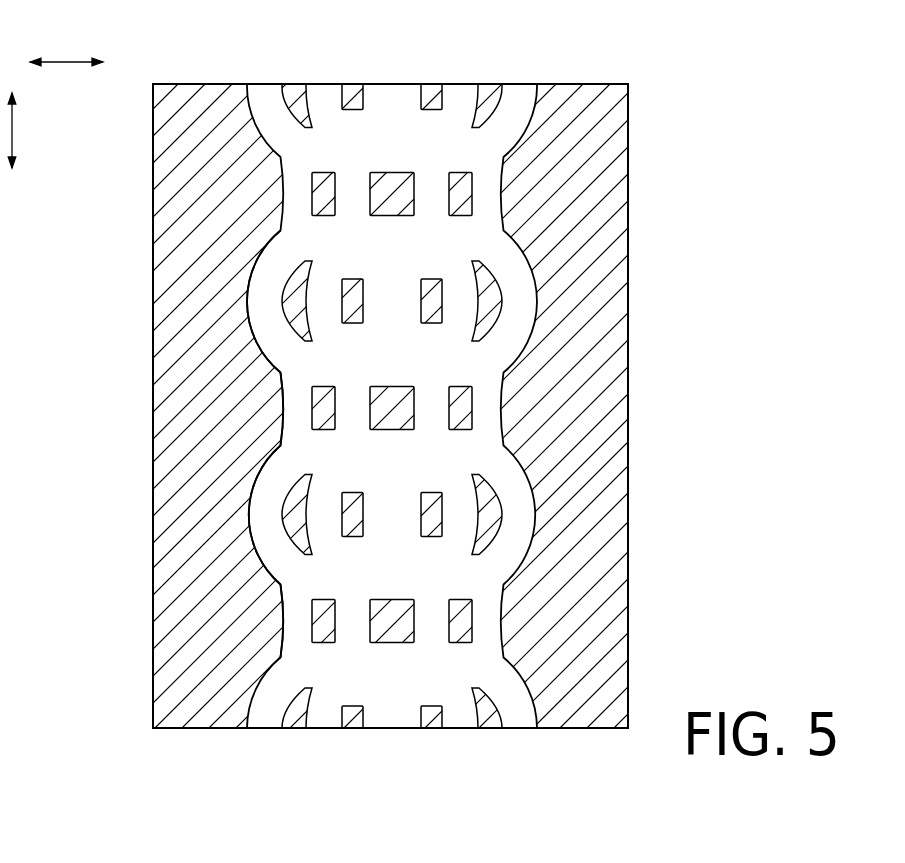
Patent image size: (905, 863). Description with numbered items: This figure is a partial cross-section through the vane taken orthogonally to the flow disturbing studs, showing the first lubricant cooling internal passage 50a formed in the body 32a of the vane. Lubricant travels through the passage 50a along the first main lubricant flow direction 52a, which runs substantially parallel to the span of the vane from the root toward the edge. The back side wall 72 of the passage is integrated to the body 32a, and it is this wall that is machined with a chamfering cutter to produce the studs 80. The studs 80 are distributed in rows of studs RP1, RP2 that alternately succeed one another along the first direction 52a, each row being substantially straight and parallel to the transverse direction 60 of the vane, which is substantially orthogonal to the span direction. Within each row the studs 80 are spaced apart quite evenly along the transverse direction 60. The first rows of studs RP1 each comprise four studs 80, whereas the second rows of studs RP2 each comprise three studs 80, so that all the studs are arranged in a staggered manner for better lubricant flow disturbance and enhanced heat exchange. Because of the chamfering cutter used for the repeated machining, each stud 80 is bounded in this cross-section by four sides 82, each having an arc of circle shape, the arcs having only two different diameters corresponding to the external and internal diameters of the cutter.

The body of the vane 32a is at (410, 405).
The first lubricant cooling internal passage 50a is at (442, 664).
The back side wall 72 is at (332, 682).
The studs 80 is at (327, 172).
The sides 82 is at (478, 290).
The transverse direction 60 is at (65, 63).
The first main lubricant flow direction 52a is at (13, 125).
The first rows of studs RP1 is at (264, 306).
The second rows of studs RP2 is at (292, 411).